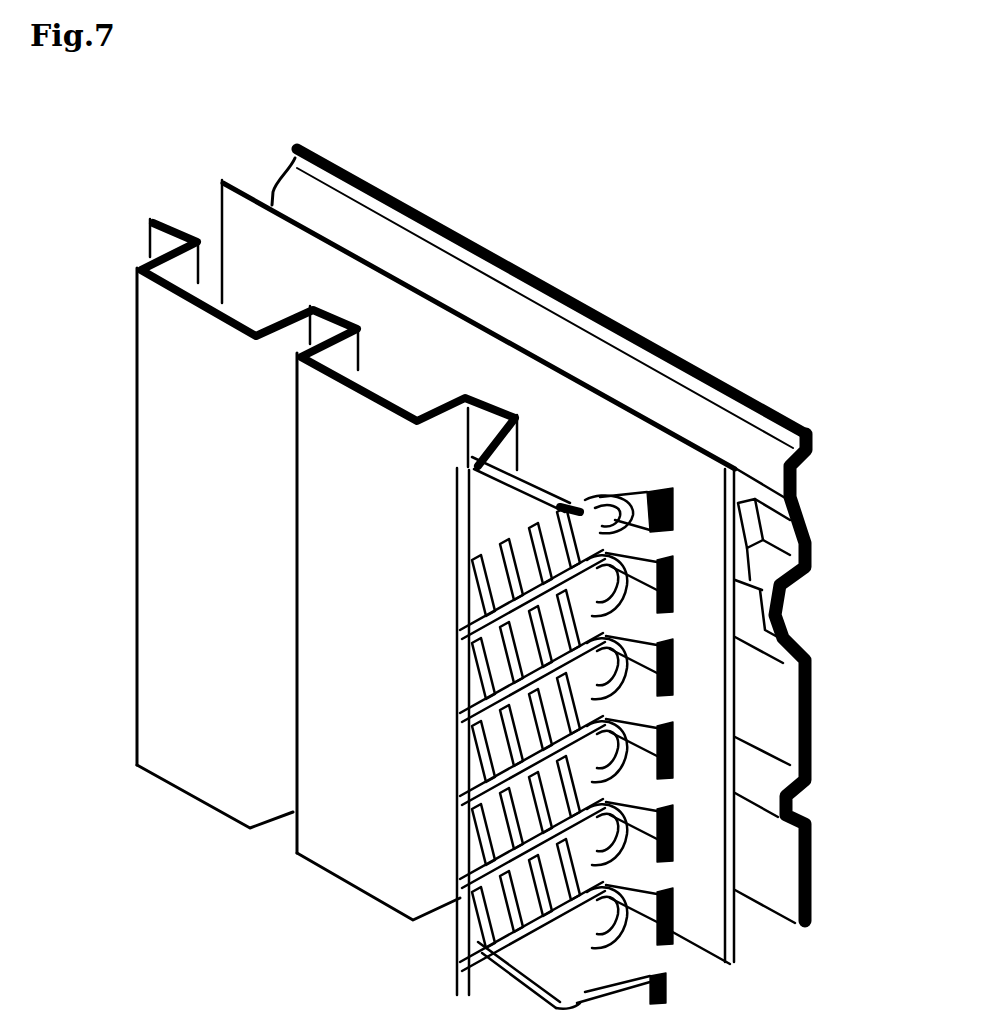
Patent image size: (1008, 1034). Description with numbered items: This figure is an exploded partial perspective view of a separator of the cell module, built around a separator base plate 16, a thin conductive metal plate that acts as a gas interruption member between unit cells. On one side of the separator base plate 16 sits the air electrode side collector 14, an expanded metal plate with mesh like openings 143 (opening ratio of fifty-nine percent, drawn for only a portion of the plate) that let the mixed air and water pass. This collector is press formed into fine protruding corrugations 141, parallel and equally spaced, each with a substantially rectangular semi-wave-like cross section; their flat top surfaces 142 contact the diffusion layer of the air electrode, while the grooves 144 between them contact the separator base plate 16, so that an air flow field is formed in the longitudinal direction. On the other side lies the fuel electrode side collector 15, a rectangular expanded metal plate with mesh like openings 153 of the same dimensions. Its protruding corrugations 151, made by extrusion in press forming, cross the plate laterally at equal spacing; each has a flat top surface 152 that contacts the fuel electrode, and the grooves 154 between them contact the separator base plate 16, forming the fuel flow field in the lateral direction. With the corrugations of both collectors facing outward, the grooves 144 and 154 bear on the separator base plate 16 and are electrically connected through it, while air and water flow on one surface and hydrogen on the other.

The air electrode side collector 14 is at (271, 589).
The protruding corrugations 141 is at (208, 798).
The flat top surfaces 142 is at (222, 560).
The mesh like openings 143 is at (489, 960).
The grooves 144 is at (493, 392).
The fuel electrode side collector 15 is at (594, 536).
The protruding corrugations 151 is at (815, 721).
The flat top surface 152 is at (812, 672).
The mesh like openings 153 is at (742, 513).
The grooves 154 is at (797, 803).
The separator base plate 16 is at (228, 215).